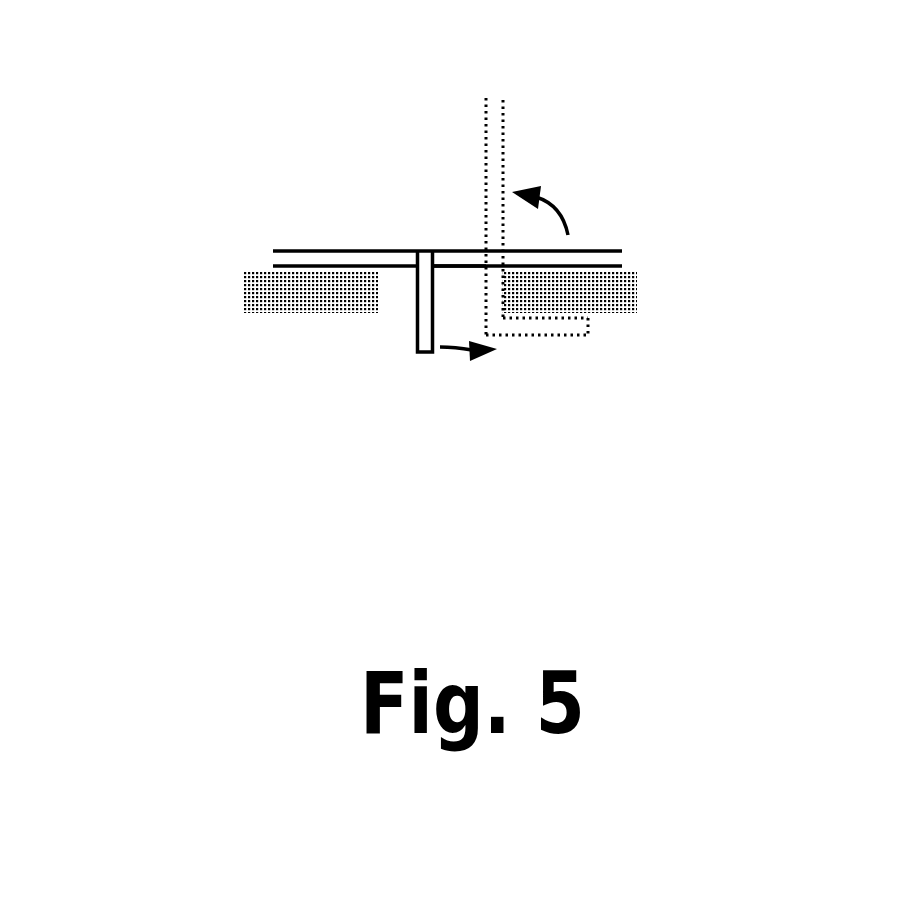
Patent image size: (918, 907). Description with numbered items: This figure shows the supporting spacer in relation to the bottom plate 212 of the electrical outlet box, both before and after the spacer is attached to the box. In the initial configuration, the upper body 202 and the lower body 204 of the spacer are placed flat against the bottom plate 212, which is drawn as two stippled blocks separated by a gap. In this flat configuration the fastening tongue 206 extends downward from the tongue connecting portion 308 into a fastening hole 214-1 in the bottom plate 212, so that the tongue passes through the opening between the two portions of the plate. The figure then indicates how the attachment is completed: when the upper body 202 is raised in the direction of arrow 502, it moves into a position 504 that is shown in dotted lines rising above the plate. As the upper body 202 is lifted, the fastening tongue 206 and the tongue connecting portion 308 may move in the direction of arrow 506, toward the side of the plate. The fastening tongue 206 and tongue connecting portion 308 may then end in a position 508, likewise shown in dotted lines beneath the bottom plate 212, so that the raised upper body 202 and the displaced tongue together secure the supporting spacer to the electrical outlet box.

The upper body 202 is at (627, 260).
The lower body 204 is at (290, 258).
The bottom plate 212 is at (310, 292).
The fastening tongue 206 is at (425, 354).
The tongue connecting portion 308 is at (462, 260).
The position 504 is at (493, 119).
The position 508 is at (570, 327).
The arrow 502 is at (565, 213).
The arrow 506 is at (455, 352).
The fastening hole 214-1 is at (400, 293).